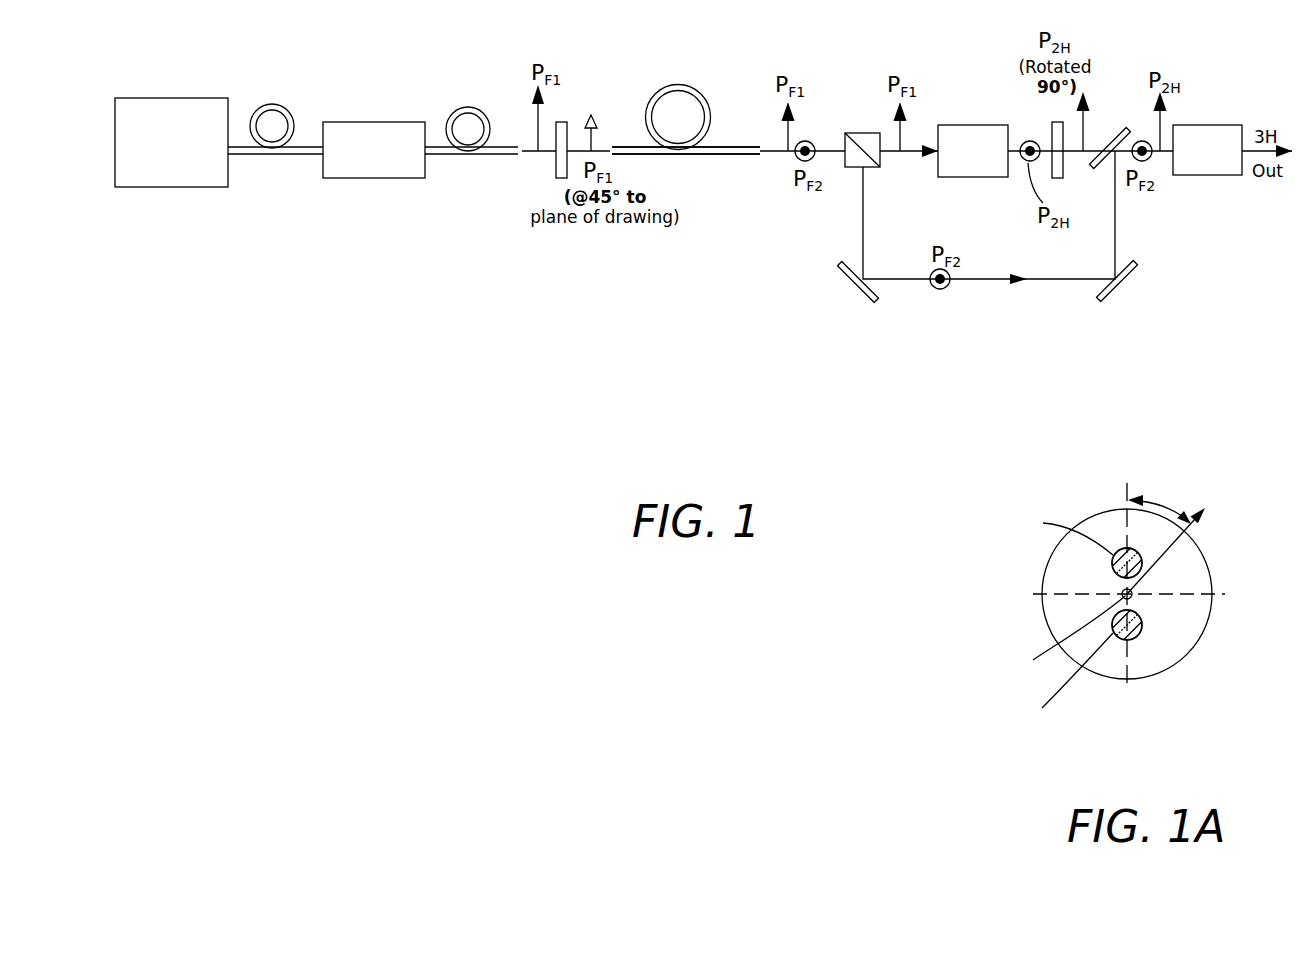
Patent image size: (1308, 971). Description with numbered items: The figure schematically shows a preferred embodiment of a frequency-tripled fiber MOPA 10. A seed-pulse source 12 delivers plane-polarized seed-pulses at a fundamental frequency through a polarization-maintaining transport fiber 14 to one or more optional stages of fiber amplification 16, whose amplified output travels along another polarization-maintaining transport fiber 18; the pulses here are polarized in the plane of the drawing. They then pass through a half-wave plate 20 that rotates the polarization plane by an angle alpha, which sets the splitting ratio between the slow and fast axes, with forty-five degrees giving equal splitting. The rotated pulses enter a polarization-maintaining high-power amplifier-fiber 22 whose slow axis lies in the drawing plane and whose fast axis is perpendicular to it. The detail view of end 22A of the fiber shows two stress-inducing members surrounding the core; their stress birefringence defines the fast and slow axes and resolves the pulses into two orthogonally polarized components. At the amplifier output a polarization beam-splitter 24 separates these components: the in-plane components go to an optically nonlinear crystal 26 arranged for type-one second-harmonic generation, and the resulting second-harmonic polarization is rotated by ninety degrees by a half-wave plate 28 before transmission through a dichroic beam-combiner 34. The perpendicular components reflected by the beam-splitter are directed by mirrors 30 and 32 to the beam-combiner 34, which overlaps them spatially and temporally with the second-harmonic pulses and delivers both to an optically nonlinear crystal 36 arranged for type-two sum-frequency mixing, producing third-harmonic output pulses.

In FIG. 1, the frequency-tripled fiber MOPA 10 is at (533, 368).
In FIG. 1, the seed-pulse source 12 is at (207, 180).
In FIG. 1, the polarization-maintaining transport fiber 14 is at (272, 106).
In FIG. 1, the stages of fiber amplification 16 is at (347, 175).
In FIG. 1, the polarization-maintaining transport fiber 18 is at (468, 108).
In FIG. 1, the half-wave plate 20 is at (555, 167).
In FIG. 1, the high-power amplifier-fiber 22 is at (673, 70).
In FIG. 1A, the high-power amplifier-fiber 22 is at (1212, 638).
In FIG. 1, the end of fiber 22A is at (618, 147).
In FIG. 1A, the end of fiber 22A is at (1192, 631).
In FIG. 1, the polarization beam-splitter 24 is at (865, 133).
In FIG. 1, the optically nonlinear crystal 26 is at (968, 125).
In FIG. 1, the half-wave plate 28 is at (1053, 125).
In FIG. 1, the mirror 30 is at (843, 275).
In FIG. 1, the mirror 32 is at (1135, 277).
In FIG. 1, the dichroic beam-combiner 34 is at (1118, 127).
In FIG. 1, the optically nonlinear crystal 36 is at (1193, 175).